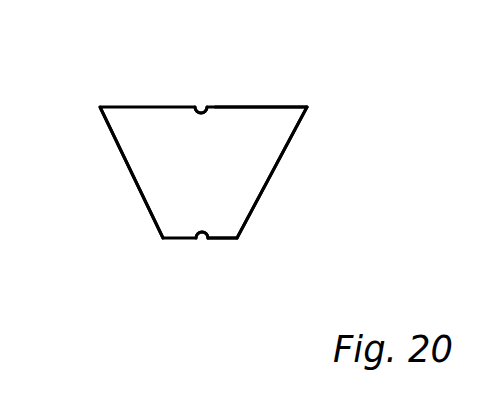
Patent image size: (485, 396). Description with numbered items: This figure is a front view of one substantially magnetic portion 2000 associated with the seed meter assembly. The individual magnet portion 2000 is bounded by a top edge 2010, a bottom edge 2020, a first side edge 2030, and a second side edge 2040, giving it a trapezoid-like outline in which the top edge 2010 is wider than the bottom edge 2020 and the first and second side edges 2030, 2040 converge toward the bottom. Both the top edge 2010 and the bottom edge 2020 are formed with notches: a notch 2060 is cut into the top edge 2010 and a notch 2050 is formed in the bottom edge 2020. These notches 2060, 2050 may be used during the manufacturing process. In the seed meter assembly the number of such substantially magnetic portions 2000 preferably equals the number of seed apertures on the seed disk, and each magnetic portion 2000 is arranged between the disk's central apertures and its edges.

The substantially magnetic portion 2000 is at (283, 68).
The top edge 2010 is at (293, 107).
The bottom edge 2020 is at (237, 238).
The first side edge 2030 is at (268, 186).
The second side edge 2040 is at (130, 176).
The notch 2050 is at (200, 238).
The notch 2060 is at (201, 106).